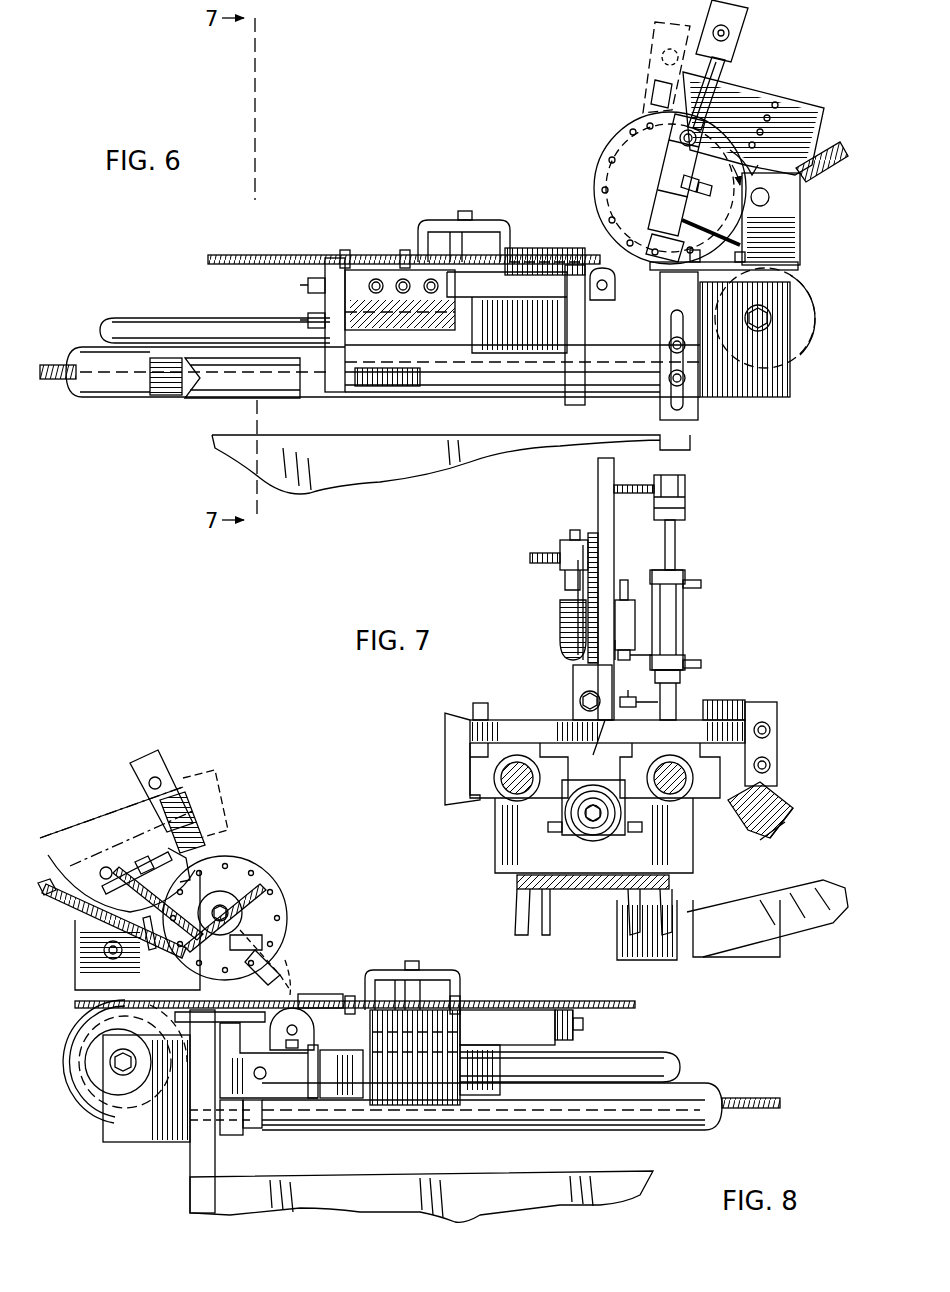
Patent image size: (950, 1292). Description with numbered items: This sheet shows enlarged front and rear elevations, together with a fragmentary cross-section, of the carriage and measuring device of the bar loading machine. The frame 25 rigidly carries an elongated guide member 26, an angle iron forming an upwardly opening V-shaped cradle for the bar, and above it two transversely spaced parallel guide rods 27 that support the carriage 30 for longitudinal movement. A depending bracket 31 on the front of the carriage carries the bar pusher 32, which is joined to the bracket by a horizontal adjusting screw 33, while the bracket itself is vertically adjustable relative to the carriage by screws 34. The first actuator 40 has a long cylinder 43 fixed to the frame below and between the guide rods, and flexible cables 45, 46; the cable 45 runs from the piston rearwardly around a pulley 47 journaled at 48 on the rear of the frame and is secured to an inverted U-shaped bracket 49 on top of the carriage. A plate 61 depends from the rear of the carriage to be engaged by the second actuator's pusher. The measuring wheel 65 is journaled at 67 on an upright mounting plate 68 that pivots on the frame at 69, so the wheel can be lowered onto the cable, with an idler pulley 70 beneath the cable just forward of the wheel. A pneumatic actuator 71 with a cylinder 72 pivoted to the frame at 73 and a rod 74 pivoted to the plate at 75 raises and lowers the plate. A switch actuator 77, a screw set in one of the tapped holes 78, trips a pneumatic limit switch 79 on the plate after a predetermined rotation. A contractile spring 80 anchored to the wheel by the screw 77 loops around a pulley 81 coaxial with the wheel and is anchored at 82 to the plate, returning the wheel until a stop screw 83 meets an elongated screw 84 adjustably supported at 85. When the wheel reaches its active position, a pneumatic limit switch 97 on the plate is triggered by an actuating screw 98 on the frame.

In FIG. 6, the frame 25 is at (798, 236).
In FIG. 7, the frame 25 is at (505, 828).
In FIG. 8, the frame 25 is at (190, 1140).
In FIG. 6, the guide member 26 is at (205, 388).
In FIG. 7, the guide member 26 is at (772, 832).
In FIG. 6, the guide rods 27 is at (190, 322).
In FIG. 7, the guide rods 27 is at (503, 788).
In FIG. 8, the guide rods 27 is at (665, 1066).
In FIG. 6, the carriage 30 is at (500, 287).
In FIG. 7, the carriage 30 is at (522, 718).
In FIG. 8, the carriage 30 is at (470, 1028).
In FIG. 6, the bracket 31 is at (338, 353).
In FIG. 7, the bracket 31 is at (775, 716).
In FIG. 6, the bar pusher 32 is at (160, 384).
In FIG. 7, the bar pusher 32 is at (775, 804).
In FIG. 6, the adjusting screw 33 is at (388, 388).
In FIG. 6, the screws 34 is at (306, 286).
In FIG. 6, the first actuator 40 is at (115, 383).
In FIG. 7, the first actuator 40 is at (571, 824).
In FIG. 8, the first actuator 40 is at (726, 1095).
In FIG. 6, the cylinder 43 is at (88, 348).
In FIG. 7, the cylinder 43 is at (615, 830).
In FIG. 8, the cylinder 43 is at (640, 1115).
In FIG. 6, the cable 45 is at (597, 250).
In FIG. 8, the cable 45 is at (337, 993).
In FIG. 6, the cable 46 is at (288, 256).
In FIG. 7, the cable 46 is at (587, 747).
In FIG. 8, the cable 46 is at (608, 999).
In FIG. 6, the pulley 47 is at (805, 337).
In FIG. 8, the pulley 47 is at (82, 1097).
In FIG. 6, the journal 48 is at (760, 332).
In FIG. 6, the inverted U-shaped bracket 49 is at (498, 222).
In FIG. 7, the inverted U-shaped bracket 49 is at (573, 690).
In FIG. 8, the inverted U-shaped bracket 49 is at (436, 972).
In FIG. 6, the plate 61 is at (563, 382).
In FIG. 6, the measuring wheel 65 is at (625, 160).
In FIG. 7, the measuring wheel 65 is at (601, 598).
In FIG. 8, the measuring wheel 65 is at (230, 870).
In FIG. 8, the journal 67 is at (228, 905).
In FIG. 6, the mounting plate 68 is at (808, 108).
In FIG. 7, the mounting plate 68 is at (600, 512).
In FIG. 8, the mounting plate 68 is at (167, 798).
In FIG. 6, the pivot 69 is at (771, 198).
In FIG. 8, the pivot 69 is at (103, 952).
In FIG. 6, the idler pulley 70 is at (603, 295).
In FIG. 8, the idler pulley 70 is at (313, 1038).
In FIG. 6, the pneumatic actuator 71 is at (680, 178).
In FIG. 7, the pneumatic actuator 71 is at (688, 605).
In FIG. 6, the cylinder 72 is at (690, 115).
In FIG. 7, the cylinder 72 is at (670, 626).
In FIG. 6, the pivot 73 is at (612, 281).
In FIG. 6, the rod 74 is at (738, 75).
In FIG. 7, the rod 74 is at (676, 537).
In FIG. 6, the pivot 75 is at (731, 36).
In FIG. 8, the switch actuator 77 is at (268, 894).
In FIG. 8, the tapped holes 78 is at (268, 960).
In FIG. 7, the pneumatic limit switch 79 is at (566, 565).
In FIG. 8, the pneumatic limit switch 79 is at (160, 813).
In FIG. 8, the contractile spring 80 is at (75, 866).
In FIG. 7, the pulley 81 is at (560, 610).
In FIG. 8, the pulley 81 is at (252, 938).
In FIG. 8, the anchor 82 is at (105, 868).
In FIG. 8, the stop screw 83 is at (120, 1052).
In FIG. 8, the elongated screw 84 is at (90, 935).
In FIG. 8, the support 85 is at (170, 1006).
In FIG. 6, the pneumatic limit switch 97 is at (800, 266).
In FIG. 7, the pneumatic limit switch 97 is at (702, 665).
In FIG. 6, the actuating screw 98 is at (698, 285).
In FIG. 7, the actuating screw 98 is at (649, 716).